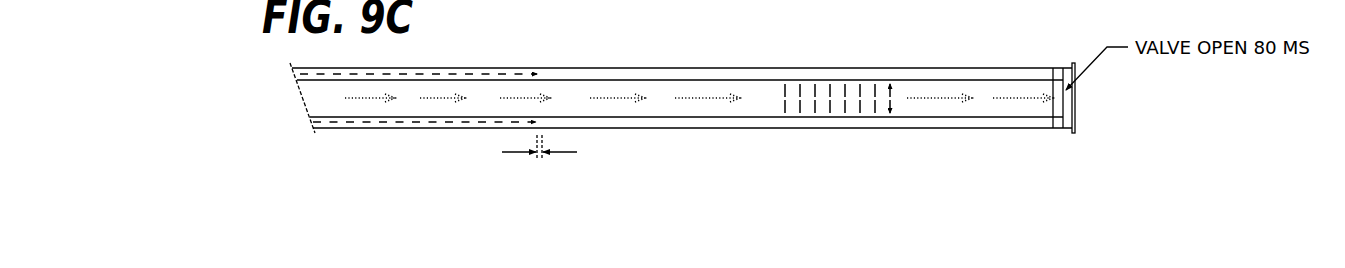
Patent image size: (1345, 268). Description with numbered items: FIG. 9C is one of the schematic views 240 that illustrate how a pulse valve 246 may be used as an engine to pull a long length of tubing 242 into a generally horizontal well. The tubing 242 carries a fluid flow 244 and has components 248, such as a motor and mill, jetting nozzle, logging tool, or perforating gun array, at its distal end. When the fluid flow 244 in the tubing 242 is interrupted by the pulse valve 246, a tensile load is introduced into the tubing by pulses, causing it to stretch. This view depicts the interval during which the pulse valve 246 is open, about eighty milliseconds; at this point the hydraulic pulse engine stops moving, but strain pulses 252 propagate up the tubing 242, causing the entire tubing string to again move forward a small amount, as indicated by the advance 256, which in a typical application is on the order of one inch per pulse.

The schematic views 240 is at (442, 194).
The tubing 242 is at (588, 69).
The fluid flow 244 is at (673, 98).
The pulse valve 246 is at (1072, 66).
The components 248 is at (1072, 118).
The strain pulses 252 is at (862, 88).
The forward movement of tubing string 256 is at (541, 161).